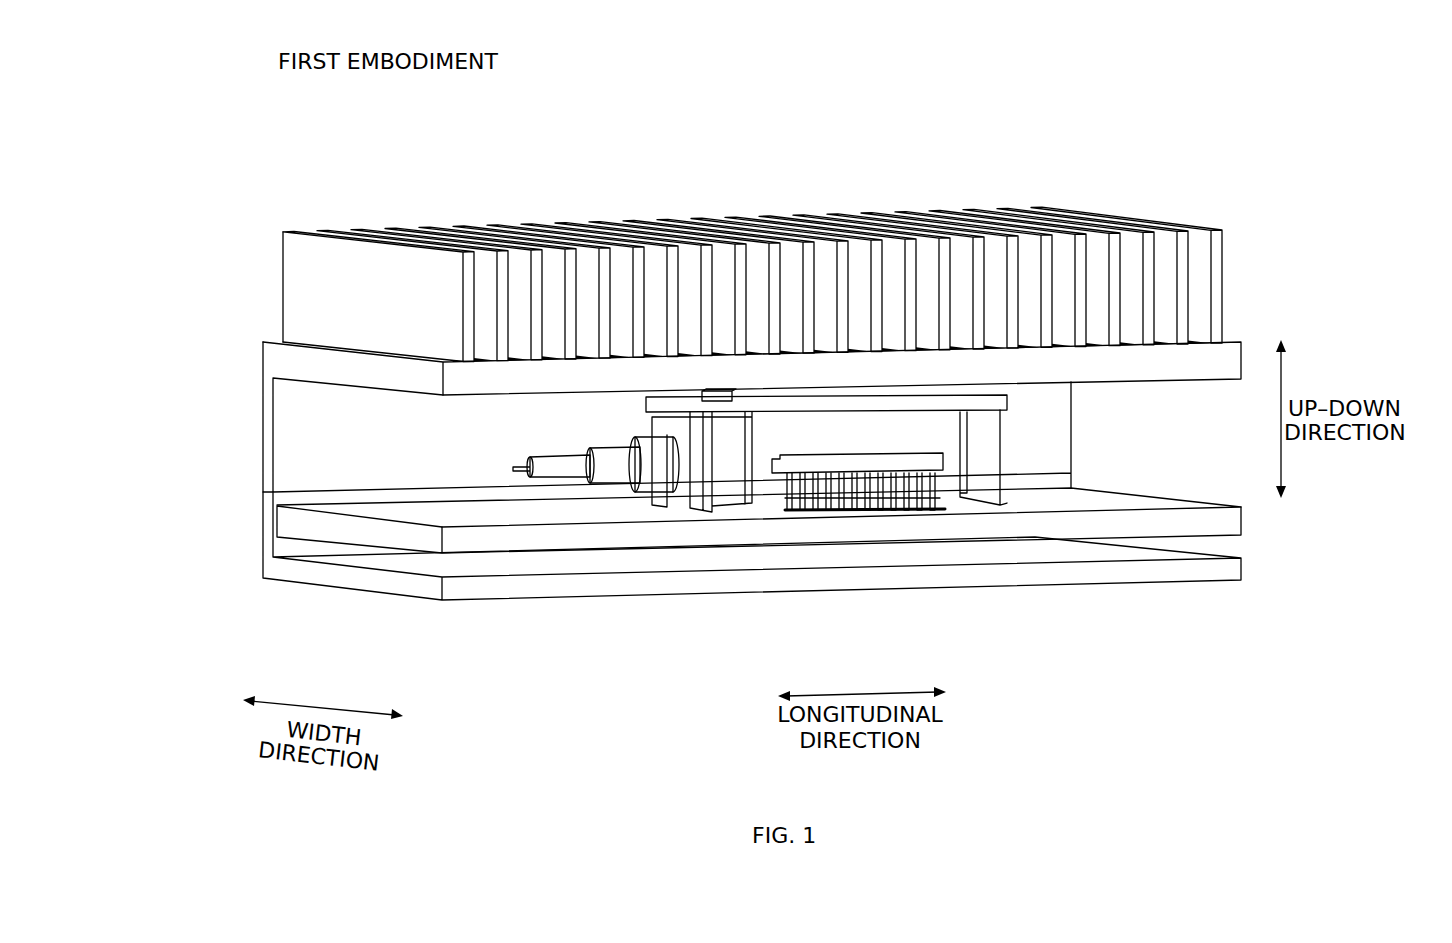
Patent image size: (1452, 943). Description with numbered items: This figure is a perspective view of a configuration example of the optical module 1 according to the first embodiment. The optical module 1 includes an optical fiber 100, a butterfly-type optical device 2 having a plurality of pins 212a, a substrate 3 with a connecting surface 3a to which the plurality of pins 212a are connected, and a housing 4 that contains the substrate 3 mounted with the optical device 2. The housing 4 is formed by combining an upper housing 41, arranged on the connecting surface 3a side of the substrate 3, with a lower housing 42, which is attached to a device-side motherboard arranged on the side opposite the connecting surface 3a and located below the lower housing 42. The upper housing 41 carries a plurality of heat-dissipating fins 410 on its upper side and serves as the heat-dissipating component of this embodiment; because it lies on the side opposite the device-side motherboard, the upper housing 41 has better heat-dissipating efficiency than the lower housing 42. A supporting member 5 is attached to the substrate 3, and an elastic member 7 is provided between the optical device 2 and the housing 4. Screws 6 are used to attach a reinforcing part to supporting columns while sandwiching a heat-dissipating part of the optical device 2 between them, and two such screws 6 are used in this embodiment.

The optical module 1 is at (1089, 181).
The heat-dissipating fins 410 is at (779, 258).
The butterfly-type optical device 2 is at (645, 426).
The optical fiber 100 is at (515, 467).
The supporting member 5 is at (1012, 447).
The connecting surface 3a is at (1133, 500).
The substrate 3 is at (1105, 525).
The housing 4 is at (141, 500).
The upper housing 41 is at (249, 461).
The lower housing 42 is at (249, 547).
The screws 6 is at (720, 394).
The pins 212a is at (880, 505).
The elastic member 7 is at (922, 390).